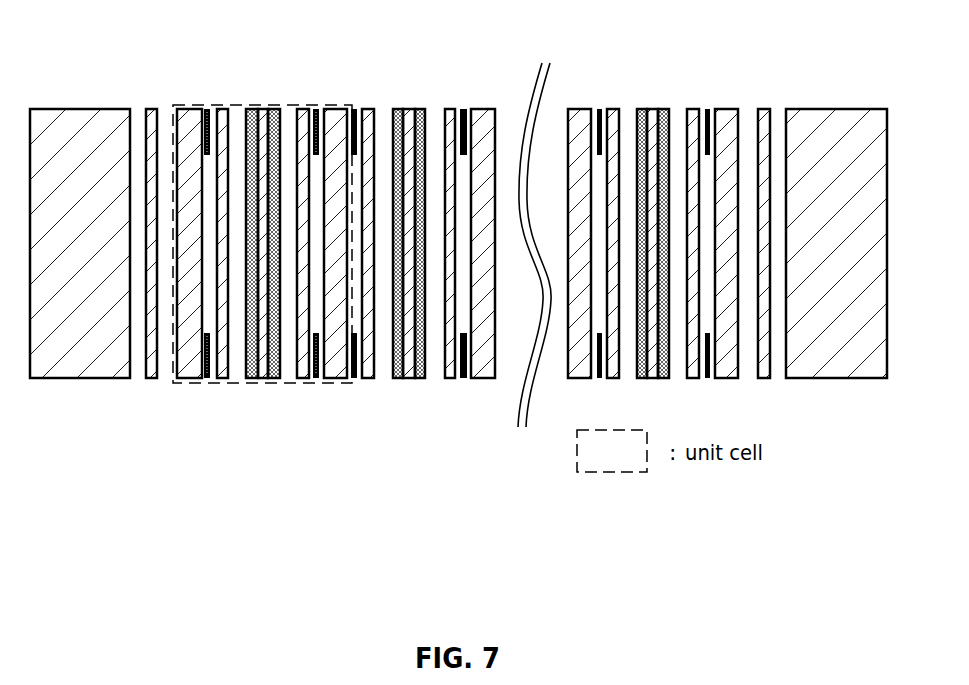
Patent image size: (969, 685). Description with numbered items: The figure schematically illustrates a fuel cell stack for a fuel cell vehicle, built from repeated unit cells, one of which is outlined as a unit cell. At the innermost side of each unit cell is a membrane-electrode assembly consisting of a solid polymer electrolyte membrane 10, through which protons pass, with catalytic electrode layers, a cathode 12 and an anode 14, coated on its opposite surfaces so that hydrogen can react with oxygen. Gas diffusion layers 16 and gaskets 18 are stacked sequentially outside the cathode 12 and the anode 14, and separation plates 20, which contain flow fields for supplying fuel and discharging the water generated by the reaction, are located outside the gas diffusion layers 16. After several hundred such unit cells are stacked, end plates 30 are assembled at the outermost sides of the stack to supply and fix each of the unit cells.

The end plate 30 is at (80, 190).
The separation plate 20 is at (250, 311).
The gasket 18 is at (280, 191).
The gas diffusion layer 16 is at (288, 189).
The anode 14 is at (233, 317).
The solid polymer electrolyte membrane 10 is at (283, 317).
The cathode 12 is at (313, 303).